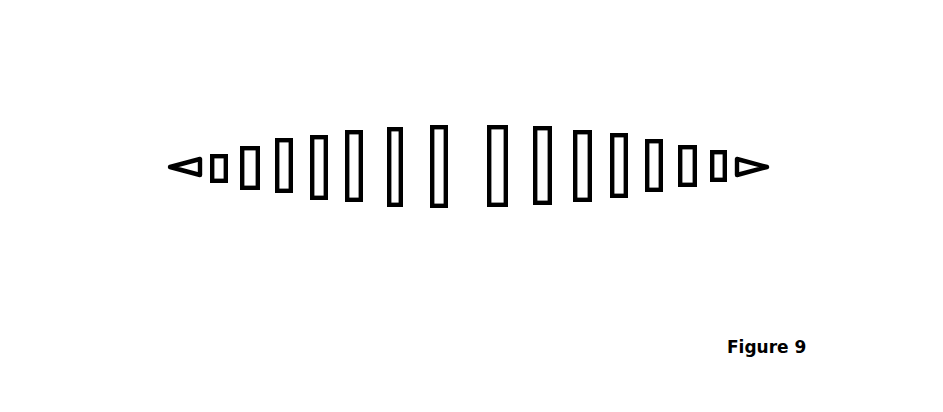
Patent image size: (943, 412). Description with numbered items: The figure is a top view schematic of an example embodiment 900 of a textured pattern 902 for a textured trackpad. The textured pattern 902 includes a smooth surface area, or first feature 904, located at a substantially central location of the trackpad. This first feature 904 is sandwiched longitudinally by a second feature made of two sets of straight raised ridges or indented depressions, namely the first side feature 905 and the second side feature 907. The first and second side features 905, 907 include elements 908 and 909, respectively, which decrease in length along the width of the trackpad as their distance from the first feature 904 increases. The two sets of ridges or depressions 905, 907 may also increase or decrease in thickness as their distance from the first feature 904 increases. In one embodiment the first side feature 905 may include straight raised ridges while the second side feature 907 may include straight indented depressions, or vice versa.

The example embodiment 900 is at (122, 127).
The textured pattern 902 is at (186, 300).
The smooth surface area (first feature) 904 is at (470, 187).
The first side feature 905 is at (775, 95).
The second side feature 907 is at (450, 95).
The elements of first side feature 908 is at (538, 205).
The elements of second side feature 909 is at (352, 202).